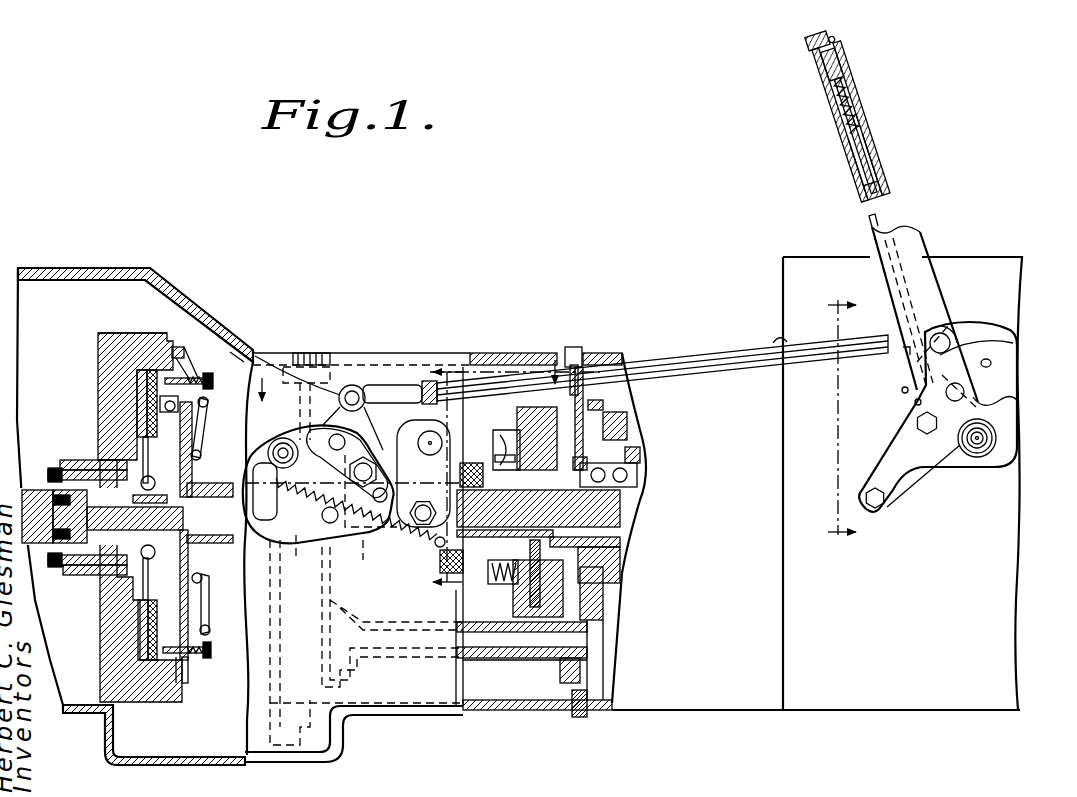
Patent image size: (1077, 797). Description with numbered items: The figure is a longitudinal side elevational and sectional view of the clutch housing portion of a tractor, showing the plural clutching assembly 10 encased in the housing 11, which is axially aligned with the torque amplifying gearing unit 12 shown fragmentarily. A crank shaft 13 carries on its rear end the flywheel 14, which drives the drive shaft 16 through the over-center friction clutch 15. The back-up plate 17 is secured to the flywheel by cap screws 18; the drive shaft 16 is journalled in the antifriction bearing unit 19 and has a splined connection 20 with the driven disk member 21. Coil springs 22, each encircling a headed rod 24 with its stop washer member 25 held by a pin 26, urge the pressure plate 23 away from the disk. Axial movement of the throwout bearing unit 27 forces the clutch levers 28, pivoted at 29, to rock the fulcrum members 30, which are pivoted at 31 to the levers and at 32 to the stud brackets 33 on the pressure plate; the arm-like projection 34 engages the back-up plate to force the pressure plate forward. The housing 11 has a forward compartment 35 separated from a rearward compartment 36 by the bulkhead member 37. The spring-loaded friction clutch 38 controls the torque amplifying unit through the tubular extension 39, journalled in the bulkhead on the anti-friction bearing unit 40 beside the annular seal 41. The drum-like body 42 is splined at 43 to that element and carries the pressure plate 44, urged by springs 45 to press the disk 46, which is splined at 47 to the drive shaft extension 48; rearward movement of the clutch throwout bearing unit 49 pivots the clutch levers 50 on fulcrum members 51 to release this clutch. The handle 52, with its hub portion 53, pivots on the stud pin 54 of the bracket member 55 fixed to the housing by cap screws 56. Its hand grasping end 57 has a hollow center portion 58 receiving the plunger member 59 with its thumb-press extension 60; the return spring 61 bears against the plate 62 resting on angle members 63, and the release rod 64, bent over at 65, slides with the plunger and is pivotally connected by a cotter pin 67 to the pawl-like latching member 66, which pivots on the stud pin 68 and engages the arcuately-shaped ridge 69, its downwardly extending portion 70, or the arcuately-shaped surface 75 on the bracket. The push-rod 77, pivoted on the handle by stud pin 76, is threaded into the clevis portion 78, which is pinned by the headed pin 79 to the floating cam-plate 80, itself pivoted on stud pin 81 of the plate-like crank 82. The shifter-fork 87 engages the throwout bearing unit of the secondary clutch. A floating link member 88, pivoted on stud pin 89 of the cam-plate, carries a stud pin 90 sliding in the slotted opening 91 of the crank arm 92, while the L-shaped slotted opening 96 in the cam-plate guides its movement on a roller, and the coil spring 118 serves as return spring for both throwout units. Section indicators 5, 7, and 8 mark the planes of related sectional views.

The section line 5- 5 is at (447, 372).
The section line 7- 7 is at (409, 392).
The section line 8- 8 is at (902, 483).
The plural clutching assembly 10 is at (390, 305).
The housing 11 is at (242, 360).
The torque amplifying gearing unit 12 is at (652, 447).
The crank shaft 13 is at (35, 488).
The flywheel 14 is at (106, 362).
The over-center friction clutch 15 is at (120, 328).
The drive shaft 16 is at (150, 586).
The back-up plate 17 is at (185, 366).
The cap screws 18 is at (182, 371).
The antifriction bearing unit 19 is at (123, 537).
The splined connection 20 is at (122, 494).
The driven disk member 21 is at (150, 477).
The coil springs 22 is at (201, 378).
The pressure plate 23 is at (151, 594).
The headed rod 24 is at (197, 377).
The stop washer member 25 is at (237, 356).
The pin 26 is at (209, 382).
The throwout bearing unit 27 is at (229, 546).
The clutch levers 28 is at (206, 421).
The pivot 29 is at (200, 456).
The fulcrum members 30 is at (201, 396).
The pivot 31 is at (208, 405).
The pivot 32 is at (171, 410).
The stud brackets 33 is at (163, 401).
The arm-like projection 34 is at (175, 421).
The forward compartment 35 is at (493, 680).
The rearward compartment 36 is at (607, 655).
The bulkhead member 37 is at (568, 668).
The friction clutch 38 is at (509, 405).
The tubular extension 39 is at (632, 494).
The anti-friction bearing unit 40 is at (592, 440).
The annular seal 41 is at (589, 400).
The drum-like body 42 is at (527, 410).
The spline 43 is at (562, 498).
The pressure plate 44 is at (513, 487).
The springs 45 is at (503, 597).
The disk 46 is at (492, 580).
The spline 47 is at (538, 498).
The drive shaft extension 48 is at (512, 548).
The clutch throwout bearing unit 49 is at (458, 551).
The clutch levers 50 is at (500, 447).
The fulcrum members 51 is at (500, 456).
The handle 52 is at (859, 119).
The hub portion 53 is at (963, 450).
The stud pin 54 is at (996, 437).
The bracket member 55 is at (886, 451).
The cap screws 56 is at (925, 433).
The hand grasping end 57 is at (855, 136).
The hollow center portion 58 is at (851, 121).
The plunger member 59 is at (832, 64).
The thumb-press extension 60 is at (817, 41).
The return spring 61 is at (846, 105).
The plate 62 is at (856, 121).
The angle members 63 is at (863, 160).
The release rod 64 is at (872, 190).
The bent-over end 65 is at (832, 40).
The pawl-like latching member 66 is at (992, 393).
The cotter pin 67 is at (915, 403).
The stud pin 68 is at (964, 390).
The arcuately-shaped ridge 69 is at (973, 352).
The downwardly extending portion 70 is at (902, 390).
The arcuately-shaped surface 75 is at (984, 362).
The stud pin 76 is at (940, 332).
The push-rod 77 is at (803, 358).
The clevis portion 78 is at (398, 400).
The headed pin 79 is at (372, 395).
The floating cam-plate 80 is at (408, 428).
The stud pin 81 is at (366, 528).
The plate-like crank 82 is at (391, 447).
The shifter-fork 87 is at (427, 528).
The floating link member 88 is at (313, 534).
The stud pin 89 is at (328, 522).
The stud pin 90 is at (387, 432).
The slotted opening 91 is at (353, 391).
The crank arm 92 is at (308, 419).
The slotted opening 96 is at (253, 462).
The coil spring 118 is at (369, 557).